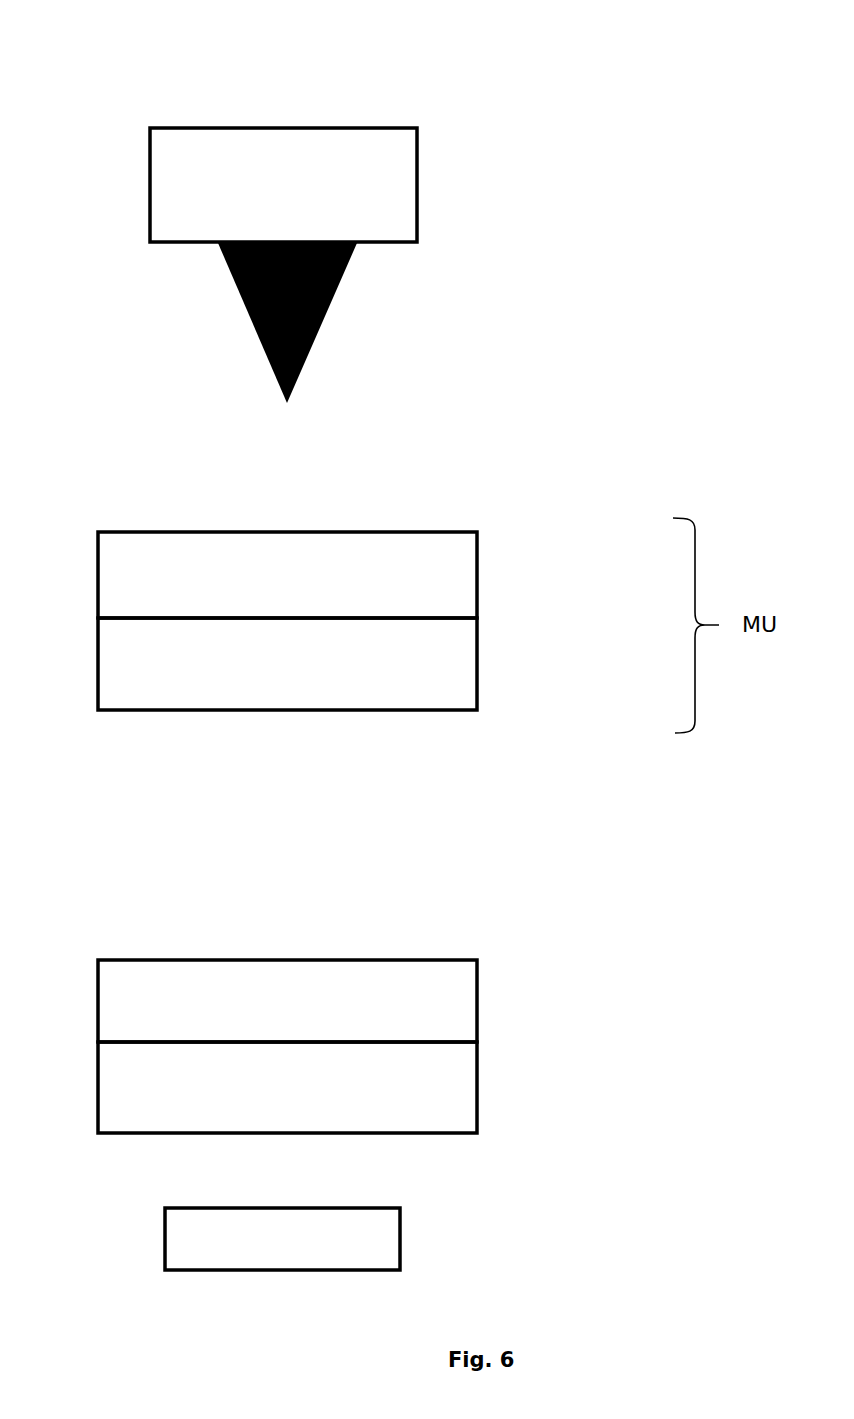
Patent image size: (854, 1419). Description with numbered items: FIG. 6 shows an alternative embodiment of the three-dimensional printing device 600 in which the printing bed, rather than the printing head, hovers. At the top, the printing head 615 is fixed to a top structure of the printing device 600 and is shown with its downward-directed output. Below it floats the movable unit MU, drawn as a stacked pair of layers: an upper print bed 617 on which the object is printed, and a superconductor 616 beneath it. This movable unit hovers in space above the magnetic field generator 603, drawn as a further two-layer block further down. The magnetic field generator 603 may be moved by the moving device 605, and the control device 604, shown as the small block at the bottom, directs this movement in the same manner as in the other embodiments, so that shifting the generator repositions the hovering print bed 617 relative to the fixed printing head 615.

The 3D printing device 600 is at (221, 84).
The printing head 615 is at (418, 188).
The printing bed 617 is at (478, 596).
The superconductor 616 is at (478, 669).
The magnetic field generator 603 is at (478, 1030).
The moving device 605 is at (478, 1104).
The control device 604 is at (401, 1240).